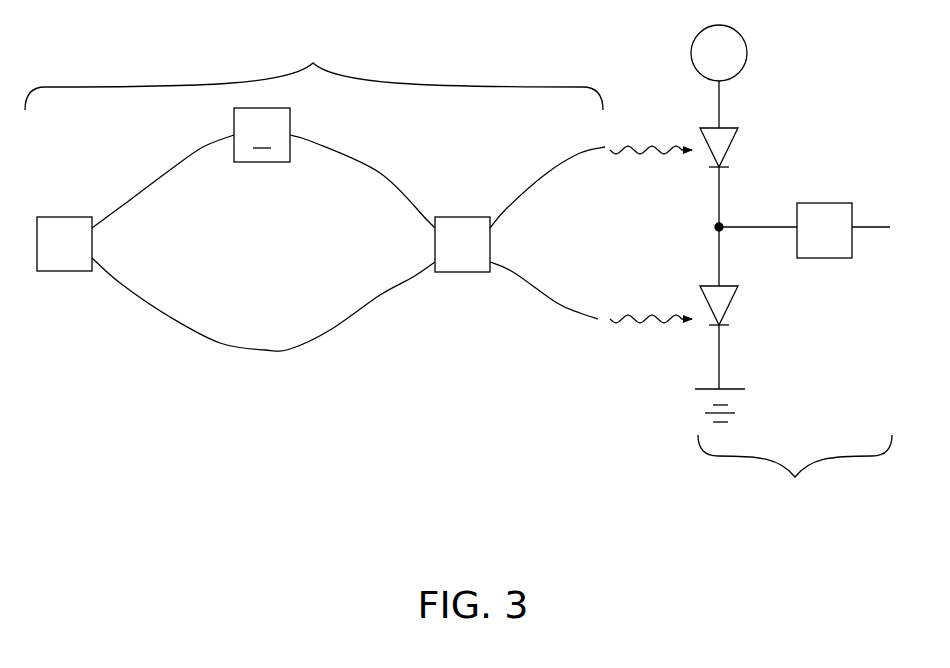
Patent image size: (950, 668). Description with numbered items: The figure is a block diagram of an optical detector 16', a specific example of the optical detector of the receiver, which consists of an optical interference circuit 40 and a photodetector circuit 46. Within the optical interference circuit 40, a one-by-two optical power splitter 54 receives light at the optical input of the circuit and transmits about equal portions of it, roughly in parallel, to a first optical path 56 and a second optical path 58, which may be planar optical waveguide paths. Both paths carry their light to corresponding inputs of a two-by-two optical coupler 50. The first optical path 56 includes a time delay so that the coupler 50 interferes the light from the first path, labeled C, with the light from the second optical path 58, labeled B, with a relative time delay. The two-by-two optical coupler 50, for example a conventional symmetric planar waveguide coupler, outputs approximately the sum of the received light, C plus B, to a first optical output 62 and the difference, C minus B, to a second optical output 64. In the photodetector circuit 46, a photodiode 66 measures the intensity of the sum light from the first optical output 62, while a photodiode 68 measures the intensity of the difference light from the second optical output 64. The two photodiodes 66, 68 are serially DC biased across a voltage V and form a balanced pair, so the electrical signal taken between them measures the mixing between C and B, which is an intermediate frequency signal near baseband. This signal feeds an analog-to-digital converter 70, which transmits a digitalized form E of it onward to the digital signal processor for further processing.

The optical interference circuit 40 is at (314, 73).
The optical detector 16' is at (269, 433).
The 1×2 optical power splitter 54 is at (50, 256).
The 2×2 optical coupler 50 is at (448, 257).
The first optical path 56 is at (386, 150).
The second optical path 58 is at (386, 320).
The first optical output 62 is at (547, 174).
The second optical output 64 is at (558, 302).
The photodiode 66 is at (737, 143).
The photodiode 68 is at (737, 295).
The analog-to-digital converter 70 is at (823, 203).
The photodetector circuit 46 is at (800, 266).